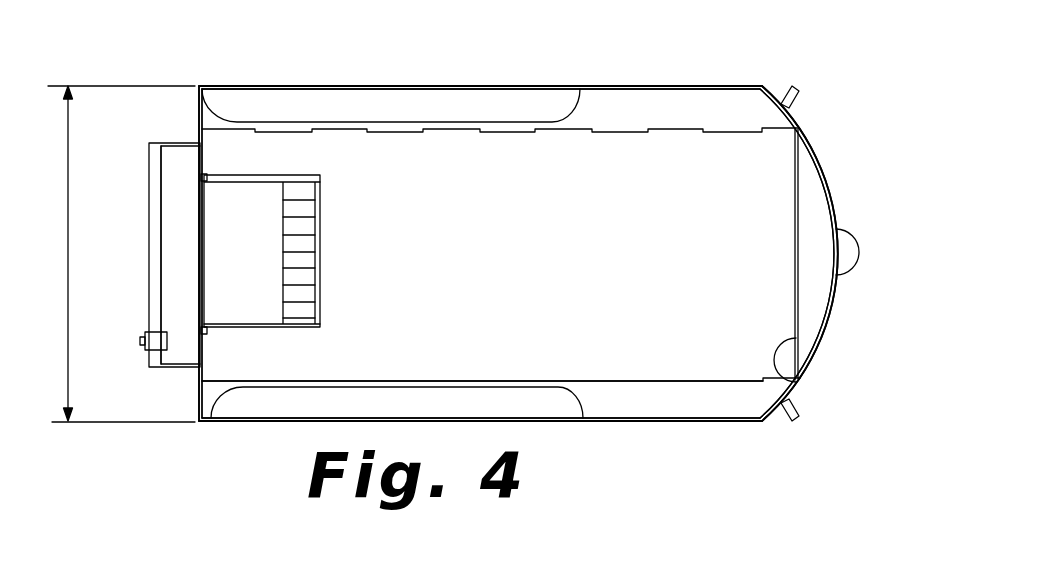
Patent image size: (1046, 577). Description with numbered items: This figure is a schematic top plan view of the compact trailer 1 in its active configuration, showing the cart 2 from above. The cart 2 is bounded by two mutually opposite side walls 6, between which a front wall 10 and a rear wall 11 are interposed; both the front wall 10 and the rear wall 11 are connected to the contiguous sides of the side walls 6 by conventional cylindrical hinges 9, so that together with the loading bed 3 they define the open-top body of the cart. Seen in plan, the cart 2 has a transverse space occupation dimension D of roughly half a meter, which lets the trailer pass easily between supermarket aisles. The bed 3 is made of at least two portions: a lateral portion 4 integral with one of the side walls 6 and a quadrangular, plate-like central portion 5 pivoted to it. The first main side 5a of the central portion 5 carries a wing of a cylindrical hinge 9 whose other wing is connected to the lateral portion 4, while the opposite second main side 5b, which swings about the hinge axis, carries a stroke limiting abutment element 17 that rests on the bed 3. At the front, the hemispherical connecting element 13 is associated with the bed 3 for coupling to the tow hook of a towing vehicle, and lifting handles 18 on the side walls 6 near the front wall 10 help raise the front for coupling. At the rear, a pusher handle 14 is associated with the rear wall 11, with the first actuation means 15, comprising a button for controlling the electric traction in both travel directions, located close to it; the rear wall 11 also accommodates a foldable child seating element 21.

The compact trailer 1 is at (120, 127).
The cart 2 is at (178, 408).
The loading bed 3 is at (735, 96).
The lateral portion 4 is at (673, 112).
The central portion 5 is at (775, 285).
The first main side 5a is at (727, 132).
The second main side 5b is at (775, 347).
The side walls 6 is at (605, 86).
The cylindrical hinges 9 is at (194, 124).
The front wall 10 is at (832, 182).
The rear wall 11 is at (200, 222).
The connecting element 13 is at (855, 233).
The pusher handle 14 is at (152, 270).
The first actuation means 15 is at (150, 344).
The stroke limiting abutment element 17 is at (717, 386).
The lifting handles 18 is at (790, 90).
The seating element 21 is at (338, 253).
The space occupation dimension D is at (66, 228).